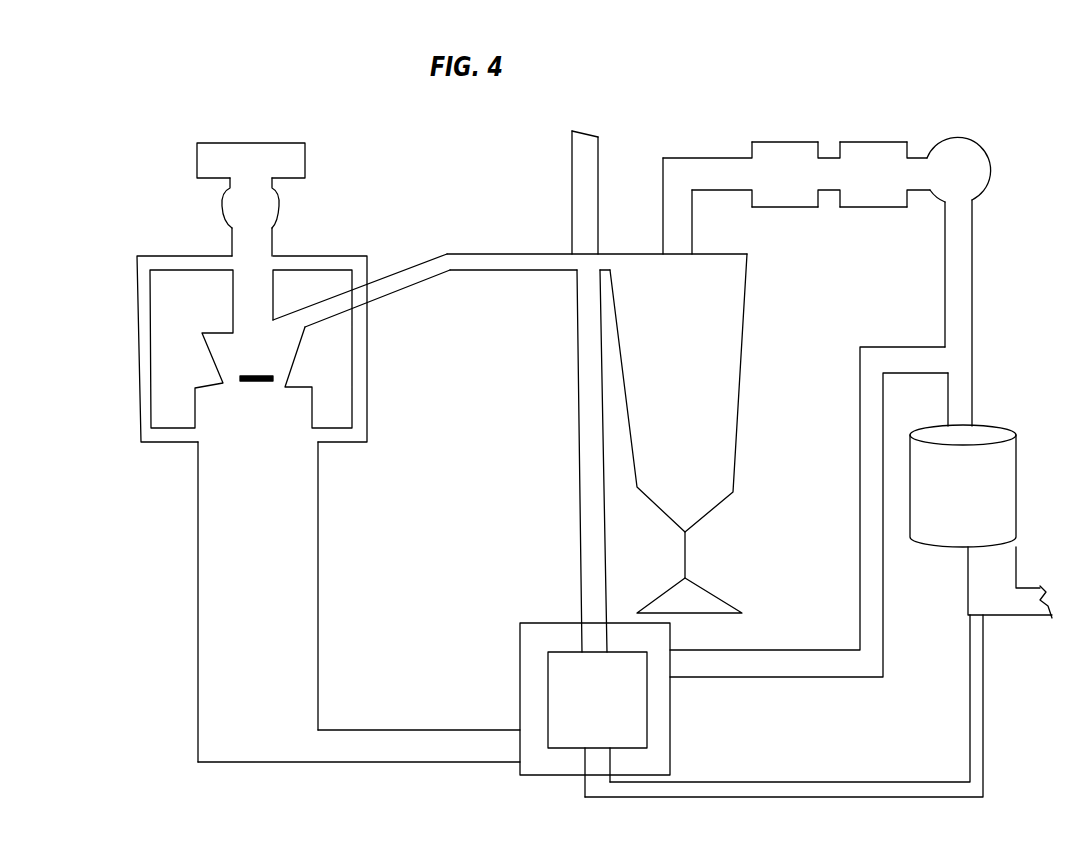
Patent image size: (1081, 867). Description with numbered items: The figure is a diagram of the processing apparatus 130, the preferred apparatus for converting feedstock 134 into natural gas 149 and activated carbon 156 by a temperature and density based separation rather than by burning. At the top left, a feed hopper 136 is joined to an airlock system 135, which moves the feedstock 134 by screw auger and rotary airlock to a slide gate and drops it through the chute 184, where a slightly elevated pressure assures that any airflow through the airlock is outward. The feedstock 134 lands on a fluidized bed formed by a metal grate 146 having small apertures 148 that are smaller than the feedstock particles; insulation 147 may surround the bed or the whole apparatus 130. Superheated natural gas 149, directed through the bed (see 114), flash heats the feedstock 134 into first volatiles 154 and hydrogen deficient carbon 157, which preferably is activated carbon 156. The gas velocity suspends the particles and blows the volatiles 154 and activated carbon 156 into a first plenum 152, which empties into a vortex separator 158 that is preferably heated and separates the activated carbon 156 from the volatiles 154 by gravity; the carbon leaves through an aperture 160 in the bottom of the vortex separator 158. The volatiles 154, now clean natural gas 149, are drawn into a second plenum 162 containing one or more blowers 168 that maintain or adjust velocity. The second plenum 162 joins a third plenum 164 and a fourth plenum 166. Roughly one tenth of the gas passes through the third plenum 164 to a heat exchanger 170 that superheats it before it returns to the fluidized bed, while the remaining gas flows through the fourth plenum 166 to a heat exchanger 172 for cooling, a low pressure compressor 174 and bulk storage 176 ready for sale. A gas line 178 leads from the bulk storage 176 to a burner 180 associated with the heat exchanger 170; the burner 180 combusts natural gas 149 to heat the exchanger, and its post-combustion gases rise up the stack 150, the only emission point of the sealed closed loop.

The processing apparatus 130 is at (517, 120).
The feedstock 134 is at (309, 238).
The feed hopper 136 is at (266, 176).
The airlock system 135 is at (267, 217).
The chute 184 is at (253, 243).
The insulation 147 is at (145, 337).
The valve member 114 is at (272, 370).
The metal grate 146 is at (247, 384).
The apertures 148 is at (267, 384).
The natural gas 149 is at (276, 486).
The first plenum 152 is at (417, 263).
The volatiles 154 is at (473, 257).
The stack 150 is at (588, 172).
The activated carbon 156 is at (490, 263).
The hydrogen deficient carbon 157 is at (745, 600).
The vortex separator 158 is at (702, 382).
The aperture 160 is at (691, 534).
The second plenum 162 is at (796, 138).
The heat exchanger 172 is at (802, 185).
The blower 168 is at (974, 184).
The fourth plenum 166 is at (958, 410).
The third plenum 164 is at (410, 747).
The low pressure compressor 174 is at (984, 507).
The bulk storage 176 is at (1009, 599).
The gas line 178 is at (803, 790).
The heat exchanger 170 is at (576, 720).
The burner 180 is at (614, 712).